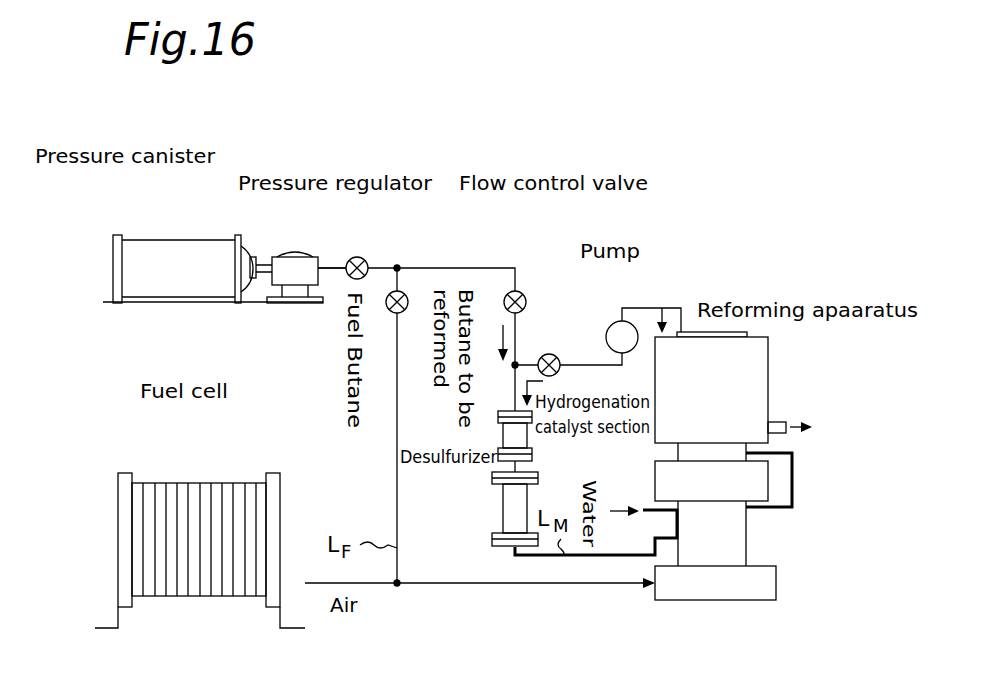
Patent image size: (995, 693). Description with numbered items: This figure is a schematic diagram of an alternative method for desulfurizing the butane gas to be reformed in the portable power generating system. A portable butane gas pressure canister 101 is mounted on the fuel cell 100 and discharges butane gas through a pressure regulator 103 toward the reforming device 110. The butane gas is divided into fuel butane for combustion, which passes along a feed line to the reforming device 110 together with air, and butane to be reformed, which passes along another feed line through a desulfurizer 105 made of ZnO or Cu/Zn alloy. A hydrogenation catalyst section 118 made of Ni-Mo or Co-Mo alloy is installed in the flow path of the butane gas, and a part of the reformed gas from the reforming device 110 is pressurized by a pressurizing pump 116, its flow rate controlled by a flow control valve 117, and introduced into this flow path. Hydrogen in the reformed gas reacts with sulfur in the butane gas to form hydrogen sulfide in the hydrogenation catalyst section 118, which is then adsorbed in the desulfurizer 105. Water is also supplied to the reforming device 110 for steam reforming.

The fuel cell 100 is at (193, 488).
The pressure canister 101 is at (154, 252).
The pressure regulator 103 is at (302, 255).
The desulfurizer 105 is at (503, 508).
The reforming device 110 is at (770, 354).
The pressurizing pump 116 is at (609, 326).
The flow control valve 117 is at (547, 353).
The hydrogenation catalyst section 118 is at (528, 442).